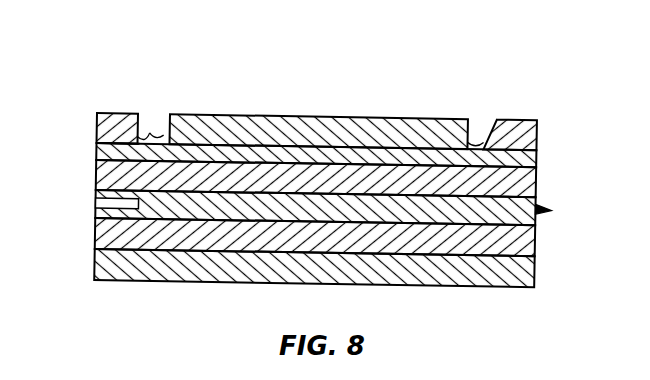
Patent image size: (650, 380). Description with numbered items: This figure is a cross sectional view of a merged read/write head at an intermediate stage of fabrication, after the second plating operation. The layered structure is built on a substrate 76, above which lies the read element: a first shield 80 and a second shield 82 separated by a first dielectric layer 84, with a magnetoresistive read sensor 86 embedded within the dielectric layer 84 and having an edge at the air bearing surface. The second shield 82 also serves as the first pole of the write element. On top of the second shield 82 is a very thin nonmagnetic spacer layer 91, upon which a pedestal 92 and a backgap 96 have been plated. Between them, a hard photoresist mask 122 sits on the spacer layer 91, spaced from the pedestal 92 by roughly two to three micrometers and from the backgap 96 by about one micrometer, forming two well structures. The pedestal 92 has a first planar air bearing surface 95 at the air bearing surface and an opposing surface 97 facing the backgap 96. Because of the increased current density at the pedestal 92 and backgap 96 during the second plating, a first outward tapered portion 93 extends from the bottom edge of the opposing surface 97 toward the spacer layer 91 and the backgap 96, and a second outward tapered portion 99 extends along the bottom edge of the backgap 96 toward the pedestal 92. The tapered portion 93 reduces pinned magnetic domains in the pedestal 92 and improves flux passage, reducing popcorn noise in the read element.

The hard photoresist mask 122 is at (385, 121).
The pedestal 92 is at (97, 126).
The opposing surface 97 is at (144, 135).
The first outward tapered portion 93 is at (150, 131).
The backgap 96 is at (498, 120).
The second outward tapered portion 99 is at (485, 133).
The nonmagnetic spacer layer 91 is at (537, 160).
The first planar air bearing surface 95 is at (97, 140).
The second shield 82 is at (539, 188).
The first dielectric layer 84 is at (545, 207).
The magnetoresistive read sensor 86 is at (108, 203).
The first shield 80 is at (540, 243).
The substrate 76 is at (540, 272).